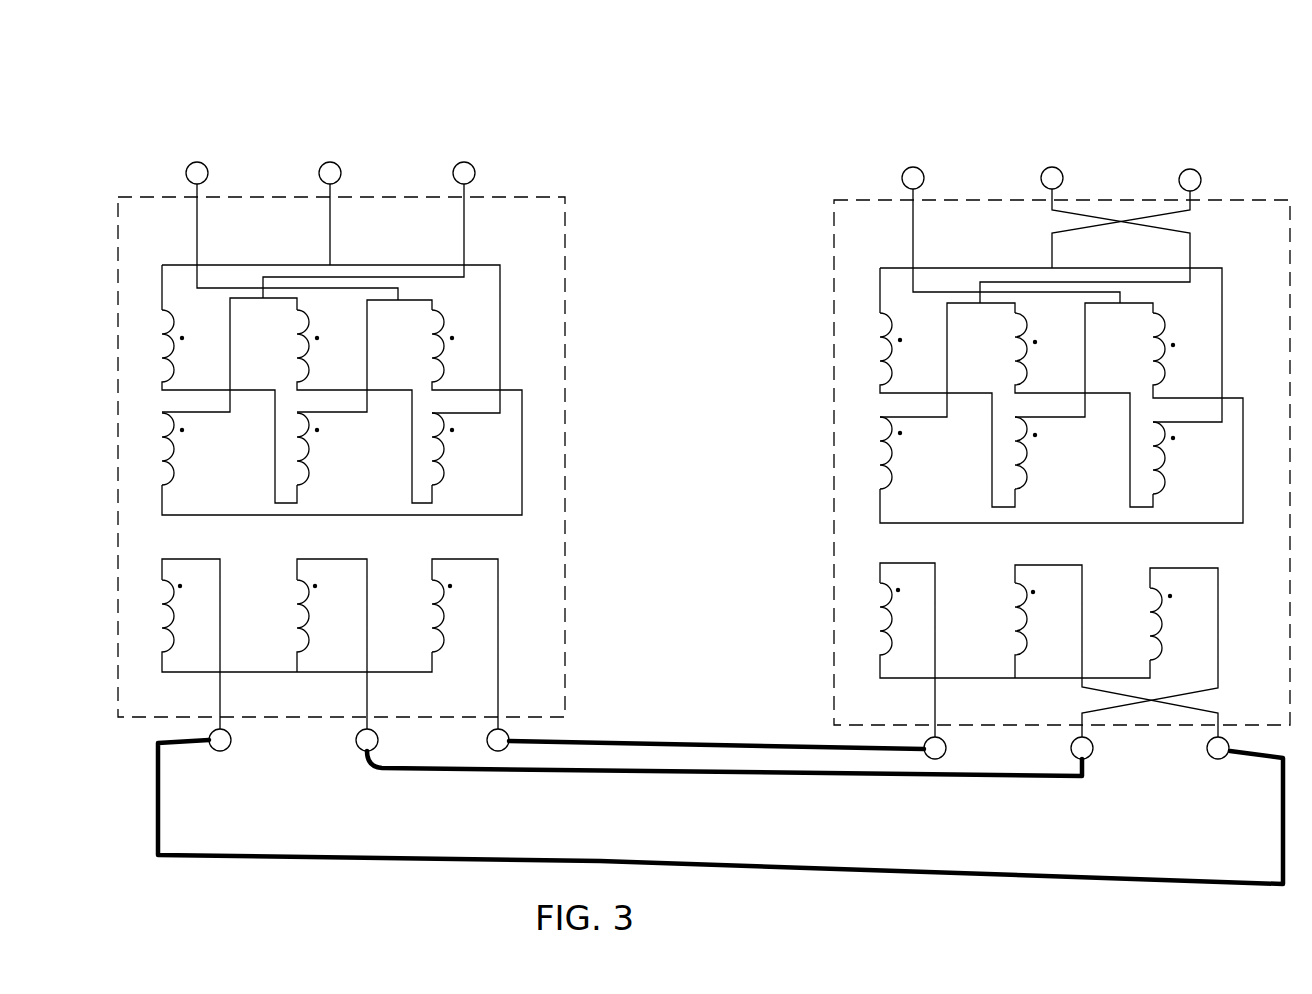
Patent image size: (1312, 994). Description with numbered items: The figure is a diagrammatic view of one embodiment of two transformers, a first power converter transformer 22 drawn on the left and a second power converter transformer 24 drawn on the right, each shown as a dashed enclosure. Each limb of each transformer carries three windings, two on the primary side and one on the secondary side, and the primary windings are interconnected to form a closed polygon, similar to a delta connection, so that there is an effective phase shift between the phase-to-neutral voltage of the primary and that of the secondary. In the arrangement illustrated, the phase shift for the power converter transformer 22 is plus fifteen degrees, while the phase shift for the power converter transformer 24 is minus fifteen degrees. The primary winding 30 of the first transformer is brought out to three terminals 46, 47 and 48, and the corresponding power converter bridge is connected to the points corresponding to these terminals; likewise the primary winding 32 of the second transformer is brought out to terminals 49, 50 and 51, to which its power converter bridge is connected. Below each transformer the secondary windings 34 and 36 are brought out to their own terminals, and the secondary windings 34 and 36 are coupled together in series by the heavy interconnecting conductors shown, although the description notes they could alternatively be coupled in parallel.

The power converter transformer 22 is at (447, 73).
The power converter transformer 24 is at (1148, 113).
The primary winding 30 is at (473, 148).
The primary winding 32 is at (1225, 172).
The secondary winding 34 is at (512, 777).
The secondary winding 36 is at (1252, 783).
The terminal 46 is at (212, 175).
The terminal 47 is at (345, 175).
The terminal 48 is at (481, 175).
The terminal 49 is at (892, 178).
The terminal 50 is at (1029, 178).
The terminal 51 is at (1167, 181).